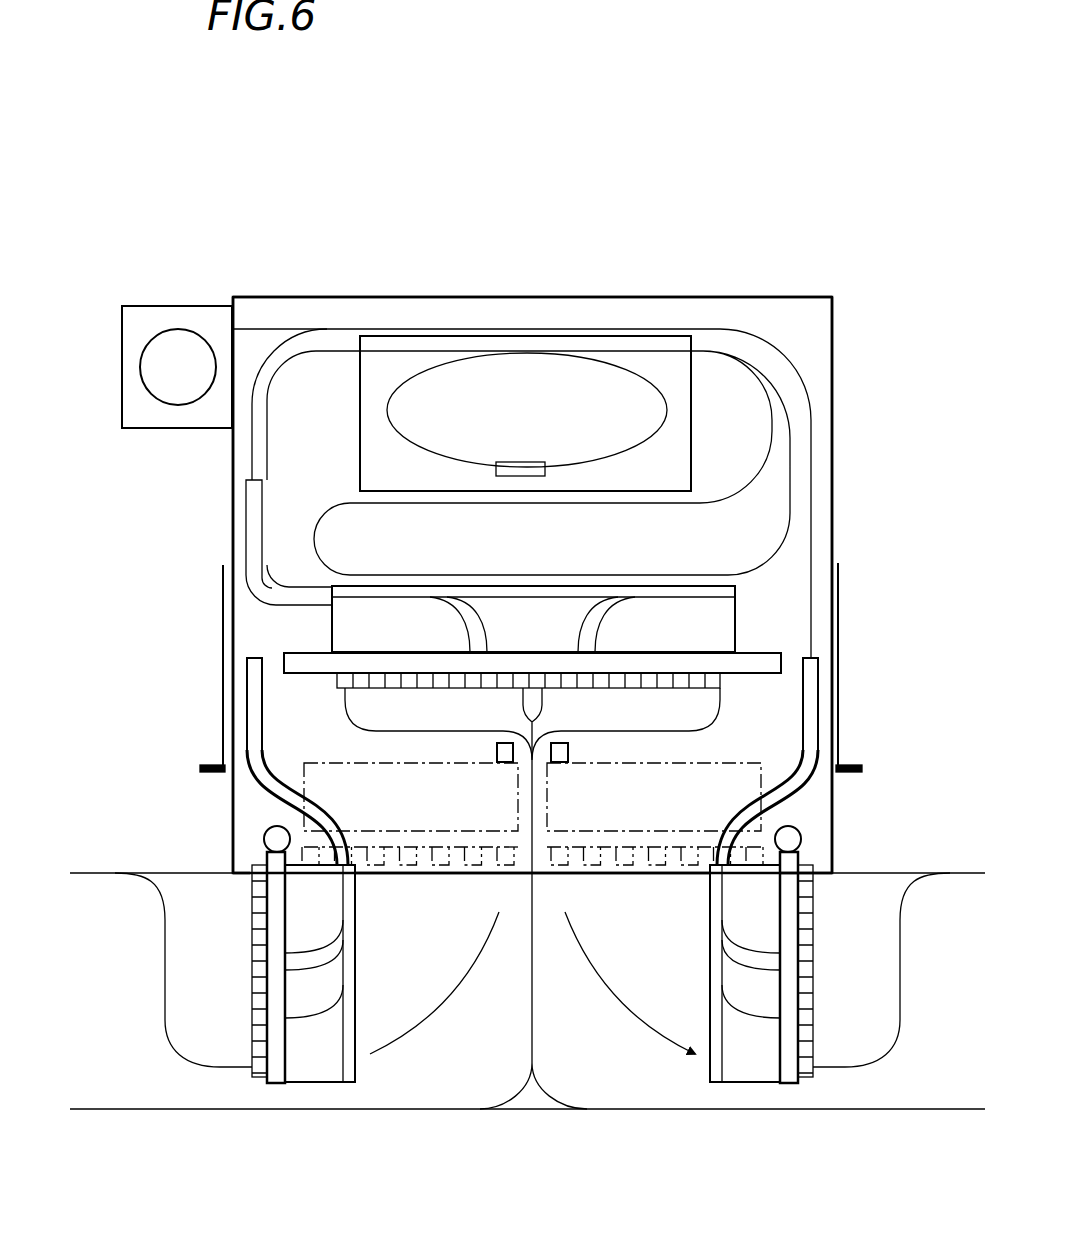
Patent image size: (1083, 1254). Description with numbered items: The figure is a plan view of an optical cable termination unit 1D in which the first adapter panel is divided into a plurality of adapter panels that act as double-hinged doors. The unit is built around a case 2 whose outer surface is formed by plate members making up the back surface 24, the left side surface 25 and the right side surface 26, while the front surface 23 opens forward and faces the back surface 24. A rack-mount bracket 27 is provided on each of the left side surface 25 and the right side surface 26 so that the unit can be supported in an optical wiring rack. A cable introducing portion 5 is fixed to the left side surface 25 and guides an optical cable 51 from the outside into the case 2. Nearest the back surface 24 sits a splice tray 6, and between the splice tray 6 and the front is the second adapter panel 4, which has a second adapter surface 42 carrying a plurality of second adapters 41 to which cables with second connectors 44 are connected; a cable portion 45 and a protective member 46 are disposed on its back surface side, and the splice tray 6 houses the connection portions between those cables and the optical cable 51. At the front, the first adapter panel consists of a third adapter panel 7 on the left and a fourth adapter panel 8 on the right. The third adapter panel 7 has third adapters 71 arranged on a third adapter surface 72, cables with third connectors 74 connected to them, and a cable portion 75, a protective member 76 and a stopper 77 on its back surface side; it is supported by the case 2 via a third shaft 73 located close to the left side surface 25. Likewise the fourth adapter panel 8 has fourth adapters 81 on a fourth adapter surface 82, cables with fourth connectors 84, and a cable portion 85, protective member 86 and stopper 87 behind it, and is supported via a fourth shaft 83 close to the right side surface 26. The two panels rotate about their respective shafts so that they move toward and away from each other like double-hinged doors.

The termination unit 1D is at (818, 258).
The case 2 is at (686, 285).
The second adapter panel 4 is at (772, 625).
The cable introducing portion 5 is at (181, 305).
The splice tray 6 is at (692, 427).
The third adapter panel 7 is at (302, 1092).
The fourth adapter panel 8 is at (742, 1092).
The front surface 23 is at (444, 875).
The back surface 24 is at (507, 297).
The left side surface 25 is at (233, 508).
The right side surface 26 is at (832, 493).
The rack-mount bracket 27 is at (205, 765).
The second adapters 41 is at (393, 689).
The second adapter surface 42 is at (310, 674).
The cables with second connectors 44 is at (602, 644).
The cable portion 45 is at (265, 395).
The protective member 46 is at (296, 588).
The optical cable 51 is at (320, 329).
The third adapters 71 is at (252, 935).
The third adapter surface 72 is at (268, 862).
The third shaft 73 is at (265, 835).
The cables with third connectors 74 is at (343, 905).
The cable portion 75 is at (247, 622).
The protective member 76 is at (252, 720).
The stopper 77 is at (497, 752).
The fourth adapters 81 is at (813, 940).
The fourth adapter surface 82 is at (798, 862).
The fourth shaft 83 is at (800, 832).
The cables with fourth connectors 84 is at (722, 905).
The cable portion 85 is at (803, 596).
The protective member 86 is at (802, 758).
The stopper 87 is at (568, 752).